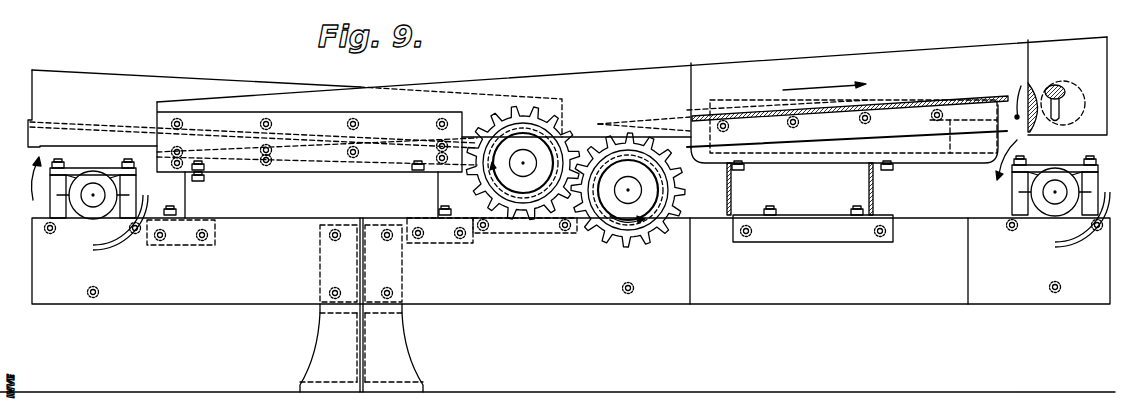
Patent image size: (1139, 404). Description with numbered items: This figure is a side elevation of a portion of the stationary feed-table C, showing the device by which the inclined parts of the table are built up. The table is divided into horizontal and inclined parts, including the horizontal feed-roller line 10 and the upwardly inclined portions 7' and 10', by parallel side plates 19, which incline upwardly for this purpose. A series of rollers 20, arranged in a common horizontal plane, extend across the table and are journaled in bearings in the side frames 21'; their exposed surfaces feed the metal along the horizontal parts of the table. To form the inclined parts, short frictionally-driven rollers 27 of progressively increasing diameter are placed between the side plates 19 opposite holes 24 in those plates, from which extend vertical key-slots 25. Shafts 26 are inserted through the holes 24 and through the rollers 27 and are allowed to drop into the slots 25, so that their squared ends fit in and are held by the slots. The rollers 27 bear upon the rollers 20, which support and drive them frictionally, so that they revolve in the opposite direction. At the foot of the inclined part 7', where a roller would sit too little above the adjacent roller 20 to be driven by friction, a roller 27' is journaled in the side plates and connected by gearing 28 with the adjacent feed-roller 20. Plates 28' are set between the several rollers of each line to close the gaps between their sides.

The upwardly inclined latter half of feed-roller line 10' is at (295, 117).
The side plates 19 is at (170, 82).
The feed-table C is at (632, 124).
The geared feed-roller 27' is at (522, 150).
The gearing 28 is at (625, 169).
The upwardly inclined final portion of feed-roller line 7' is at (644, 103).
The plates 28' is at (847, 109).
The feed-roller line 10 is at (842, 157).
The frictionally-driven rollers 27 is at (1010, 100).
The holes 24 is at (1055, 84).
The shafts 26 is at (1066, 92).
The vertical key-slots 25 is at (1061, 117).
The rollers 20 is at (1003, 183).
The side frames 21' is at (571, 259).